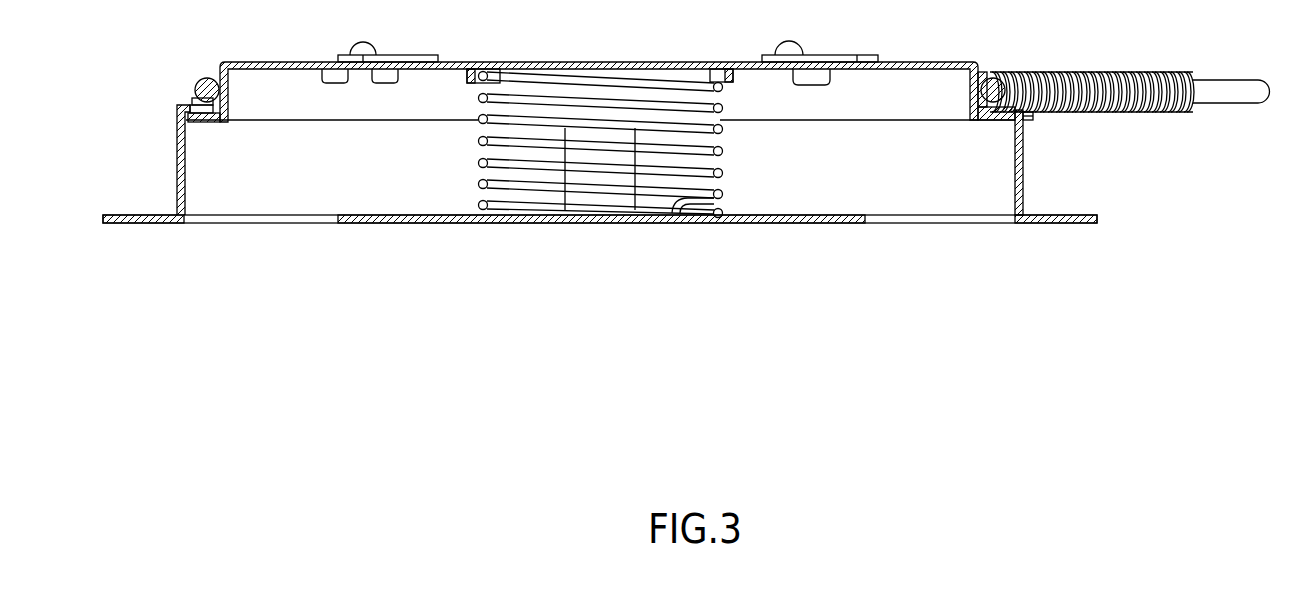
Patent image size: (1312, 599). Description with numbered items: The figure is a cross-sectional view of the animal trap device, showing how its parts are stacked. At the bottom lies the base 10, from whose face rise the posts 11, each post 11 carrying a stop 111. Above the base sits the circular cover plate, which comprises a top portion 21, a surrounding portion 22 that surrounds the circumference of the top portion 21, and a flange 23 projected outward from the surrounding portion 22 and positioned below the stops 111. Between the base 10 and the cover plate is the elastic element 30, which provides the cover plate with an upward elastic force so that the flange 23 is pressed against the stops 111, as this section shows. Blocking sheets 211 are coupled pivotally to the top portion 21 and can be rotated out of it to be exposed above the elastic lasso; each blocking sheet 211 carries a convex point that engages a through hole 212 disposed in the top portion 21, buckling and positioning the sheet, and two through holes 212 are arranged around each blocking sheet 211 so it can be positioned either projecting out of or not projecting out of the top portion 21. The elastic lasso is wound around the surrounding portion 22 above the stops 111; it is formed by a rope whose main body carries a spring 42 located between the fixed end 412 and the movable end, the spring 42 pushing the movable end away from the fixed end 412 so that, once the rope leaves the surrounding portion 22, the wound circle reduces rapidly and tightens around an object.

The base 10 is at (1080, 224).
The post 11 is at (1040, 179).
The stop 111 is at (1003, 114).
The top portion 21 is at (940, 62).
The blocking sheet 211 is at (413, 60).
The through hole 212 is at (386, 84).
The surrounding portion 22 is at (988, 80).
The flange 23 is at (1033, 118).
The elastic element 30 is at (518, 207).
The spring 42 is at (1150, 72).
The fixed end 412 is at (1238, 80).